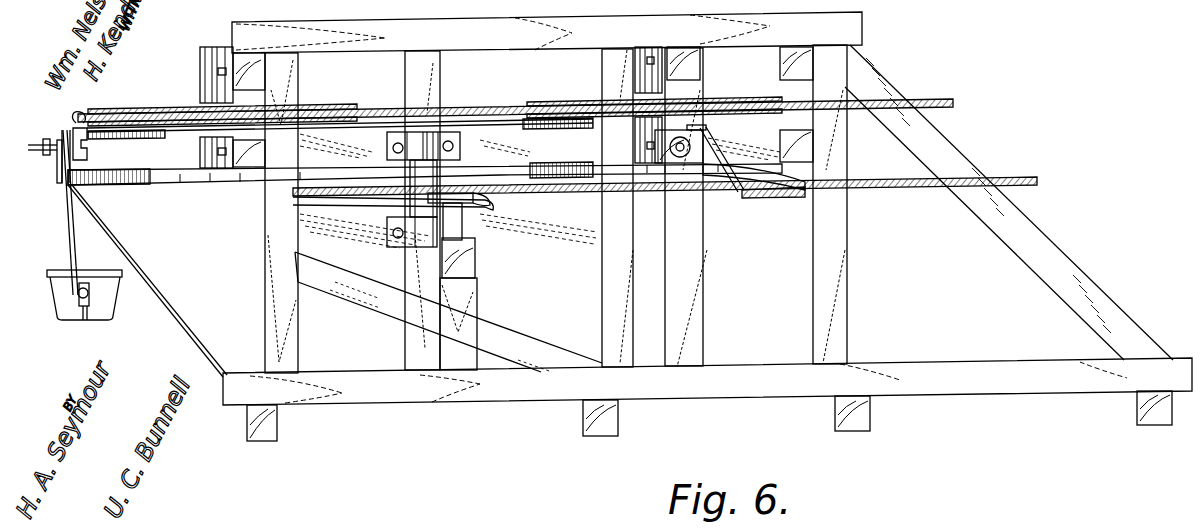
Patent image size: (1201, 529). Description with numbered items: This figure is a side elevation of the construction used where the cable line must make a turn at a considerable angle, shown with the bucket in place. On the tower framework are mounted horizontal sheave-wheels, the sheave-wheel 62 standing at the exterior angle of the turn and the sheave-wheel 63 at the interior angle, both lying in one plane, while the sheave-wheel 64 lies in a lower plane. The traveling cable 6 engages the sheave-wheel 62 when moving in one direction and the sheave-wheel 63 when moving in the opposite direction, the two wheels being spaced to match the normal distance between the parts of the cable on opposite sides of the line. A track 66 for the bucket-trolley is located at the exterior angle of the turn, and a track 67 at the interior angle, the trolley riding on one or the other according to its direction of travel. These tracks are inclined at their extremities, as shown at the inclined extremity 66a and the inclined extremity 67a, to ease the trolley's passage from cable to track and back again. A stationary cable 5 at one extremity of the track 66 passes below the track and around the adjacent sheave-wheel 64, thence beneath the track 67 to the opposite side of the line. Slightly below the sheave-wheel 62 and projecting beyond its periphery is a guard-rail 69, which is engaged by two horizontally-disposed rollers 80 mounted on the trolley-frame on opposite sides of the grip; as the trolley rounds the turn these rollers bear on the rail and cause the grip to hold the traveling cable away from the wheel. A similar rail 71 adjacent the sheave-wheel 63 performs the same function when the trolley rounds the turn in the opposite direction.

The stationary cable 5 is at (913, 183).
The traveling cable 6 is at (373, 108).
The sheave-wheel 62 is at (143, 108).
The sheave-wheel 63 is at (552, 103).
The sheave-wheel 64 is at (317, 202).
The track 66 is at (197, 181).
The inclined extremity of track 66a is at (385, 182).
The track 67 is at (582, 177).
The inclined extremity of track 67a is at (770, 195).
The guard-rail 69 is at (113, 133).
The rail 71 is at (558, 127).
The horizontally-disposed rollers 80 is at (73, 122).